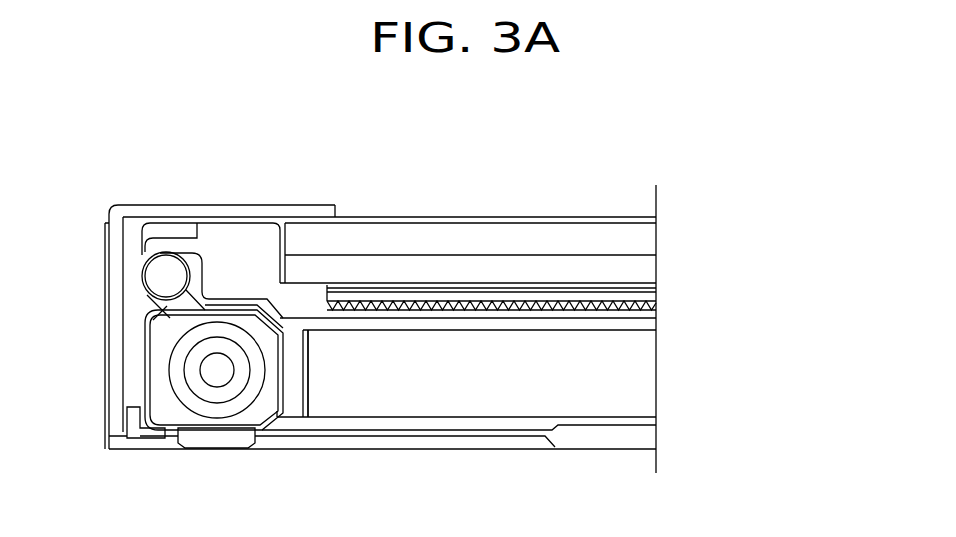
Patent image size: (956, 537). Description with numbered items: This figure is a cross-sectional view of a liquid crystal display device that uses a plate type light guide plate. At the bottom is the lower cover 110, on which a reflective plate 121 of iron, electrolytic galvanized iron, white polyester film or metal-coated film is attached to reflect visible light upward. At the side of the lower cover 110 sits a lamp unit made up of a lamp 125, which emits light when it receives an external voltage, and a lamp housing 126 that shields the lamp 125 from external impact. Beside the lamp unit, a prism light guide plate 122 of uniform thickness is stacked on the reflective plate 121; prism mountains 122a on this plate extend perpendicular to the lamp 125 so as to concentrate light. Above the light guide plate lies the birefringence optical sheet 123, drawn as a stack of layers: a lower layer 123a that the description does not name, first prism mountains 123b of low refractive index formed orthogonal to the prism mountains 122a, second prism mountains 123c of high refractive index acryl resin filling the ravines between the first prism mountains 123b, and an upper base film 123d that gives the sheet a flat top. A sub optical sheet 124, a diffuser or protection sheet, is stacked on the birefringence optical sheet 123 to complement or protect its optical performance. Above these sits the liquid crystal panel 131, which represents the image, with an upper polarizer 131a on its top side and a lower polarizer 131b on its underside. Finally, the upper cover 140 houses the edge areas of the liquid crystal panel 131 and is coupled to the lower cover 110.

The lower cover 110 is at (655, 447).
The reflective plate 121 is at (655, 425).
The prism light guide plate 122 is at (498, 406).
The prism mountains 122a is at (495, 325).
The birefringence optical sheet 123 is at (557, 328).
The first layer 123a is at (650, 320).
The first prism mountains 123b is at (650, 311).
The second prism mountains 123c is at (650, 302).
The upper base film 123d is at (650, 294).
The sub optical sheet 124 is at (650, 286).
The lamp 125 is at (213, 370).
The lamp housing 126 is at (168, 438).
The liquid crystal panel 131 is at (504, 247).
The upper polarizer 131a is at (655, 221).
The lower polarizer 131b is at (655, 280).
The upper cover 140 is at (207, 210).